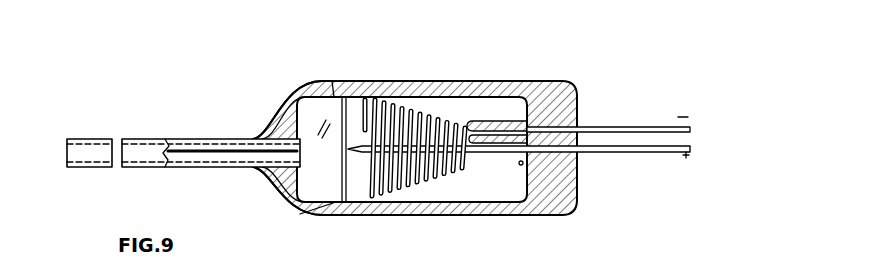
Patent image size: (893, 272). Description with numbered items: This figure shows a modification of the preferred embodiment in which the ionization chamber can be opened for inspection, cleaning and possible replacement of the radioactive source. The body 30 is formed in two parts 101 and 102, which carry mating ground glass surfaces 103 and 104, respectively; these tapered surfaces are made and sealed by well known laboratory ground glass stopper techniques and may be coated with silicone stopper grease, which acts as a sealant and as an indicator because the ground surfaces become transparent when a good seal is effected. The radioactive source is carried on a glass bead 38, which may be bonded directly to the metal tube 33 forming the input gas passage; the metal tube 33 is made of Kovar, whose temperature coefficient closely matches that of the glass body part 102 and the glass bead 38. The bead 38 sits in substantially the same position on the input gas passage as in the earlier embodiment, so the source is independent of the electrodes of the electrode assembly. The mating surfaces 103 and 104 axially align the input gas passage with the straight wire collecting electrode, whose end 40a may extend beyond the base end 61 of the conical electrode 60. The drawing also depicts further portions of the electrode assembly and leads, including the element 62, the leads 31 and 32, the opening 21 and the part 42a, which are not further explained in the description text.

The body part 101 is at (572, 82).
The body part 102 is at (288, 97).
The ground glass surface 103 is at (331, 81).
The ground glass surface 104 is at (313, 81).
The metal tube 33 is at (188, 138).
The glass bead carrying radioactive source 38 is at (272, 168).
The end of collecting electrode 40a is at (362, 153).
The body 30 is at (440, 80).
The conical electrode 60 is at (438, 120).
The base end of conical electrode 61 is at (370, 200).
The spring end 62 is at (438, 216).
The negative lead 31 is at (640, 127).
The positive lead pin 32 is at (624, 153).
The vent opening 21 is at (521, 165).
The electrode bar 42a is at (487, 154).